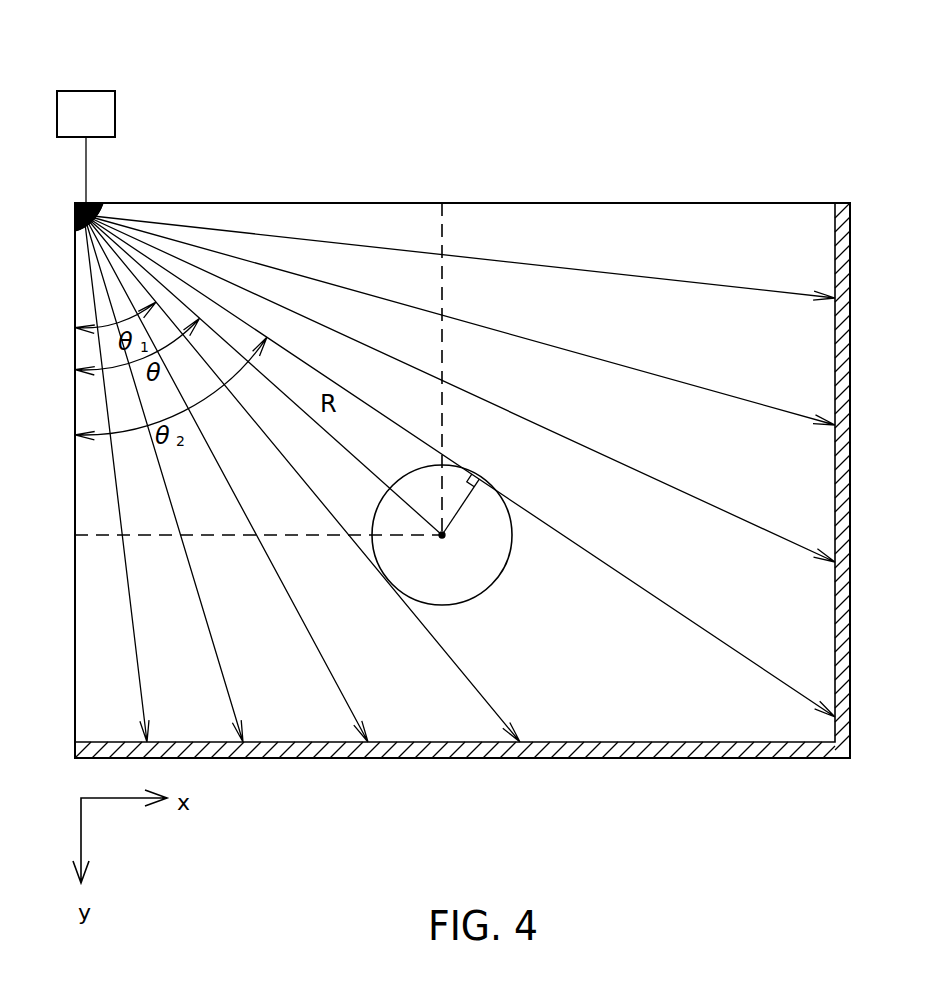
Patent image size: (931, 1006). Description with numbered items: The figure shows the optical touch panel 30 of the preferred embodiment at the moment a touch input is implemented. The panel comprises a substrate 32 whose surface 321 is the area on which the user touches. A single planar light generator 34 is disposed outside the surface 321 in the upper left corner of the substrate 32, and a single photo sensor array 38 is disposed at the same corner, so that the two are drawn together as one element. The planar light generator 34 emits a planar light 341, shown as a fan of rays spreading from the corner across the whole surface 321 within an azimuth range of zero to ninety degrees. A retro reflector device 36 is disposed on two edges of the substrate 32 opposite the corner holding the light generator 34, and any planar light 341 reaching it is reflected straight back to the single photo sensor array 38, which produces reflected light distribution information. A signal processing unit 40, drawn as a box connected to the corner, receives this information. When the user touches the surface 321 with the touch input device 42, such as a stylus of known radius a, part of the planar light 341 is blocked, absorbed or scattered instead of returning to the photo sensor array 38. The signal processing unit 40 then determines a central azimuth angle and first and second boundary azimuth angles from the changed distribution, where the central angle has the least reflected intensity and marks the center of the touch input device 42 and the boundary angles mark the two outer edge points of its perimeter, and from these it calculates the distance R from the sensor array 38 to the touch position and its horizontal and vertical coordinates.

The optical touch panel 30 is at (760, 88).
The substrate 32 is at (653, 203).
The surface 321 is at (567, 233).
The single planar light generator 34 is at (98, 203).
The single photo sensor array 38 is at (89, 217).
The planar light 341 is at (752, 292).
The retro reflector device 36 is at (850, 603).
The signal processing unit 40 is at (102, 128).
The touch input device 42 is at (467, 575).